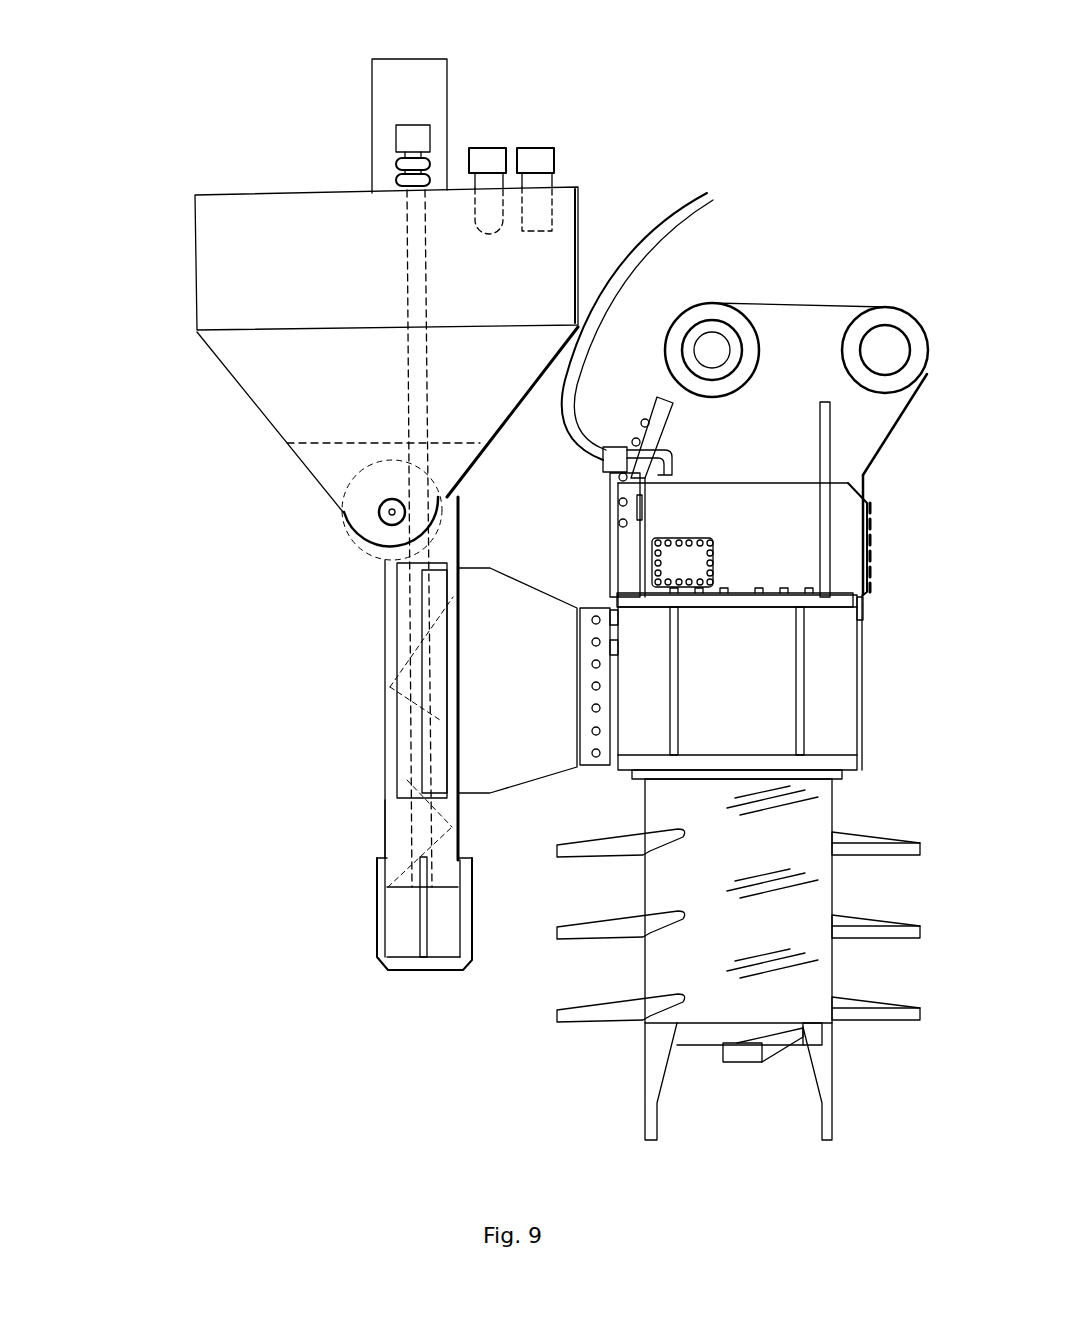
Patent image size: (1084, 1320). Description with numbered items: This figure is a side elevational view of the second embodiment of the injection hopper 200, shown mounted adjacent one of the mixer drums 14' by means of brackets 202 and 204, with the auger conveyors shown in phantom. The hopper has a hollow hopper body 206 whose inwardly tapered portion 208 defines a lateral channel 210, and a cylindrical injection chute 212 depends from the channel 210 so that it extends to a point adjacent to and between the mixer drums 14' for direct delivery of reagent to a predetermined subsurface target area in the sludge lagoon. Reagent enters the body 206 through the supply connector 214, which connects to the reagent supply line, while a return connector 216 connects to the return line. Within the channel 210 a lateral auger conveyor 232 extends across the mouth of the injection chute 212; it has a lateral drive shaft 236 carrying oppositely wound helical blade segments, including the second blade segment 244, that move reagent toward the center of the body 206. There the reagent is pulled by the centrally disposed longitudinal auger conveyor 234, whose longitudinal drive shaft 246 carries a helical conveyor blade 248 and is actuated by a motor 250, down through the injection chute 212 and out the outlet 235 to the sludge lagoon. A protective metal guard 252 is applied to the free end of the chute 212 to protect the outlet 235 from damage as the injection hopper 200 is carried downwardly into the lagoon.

The injection hopper 200 is at (203, 168).
The bracket 202 is at (598, 400).
The bracket 204 is at (508, 748).
The hopper body 206 is at (197, 300).
The inwardly tapered portion 208 is at (230, 370).
The lateral channel 210 is at (360, 548).
The injection chute 212 is at (385, 782).
The supply connector 214 is at (492, 148).
The return connector 216 is at (536, 150).
The lateral auger conveyor 232 is at (340, 473).
The longitudinal auger conveyor 234 is at (395, 615).
The outlet 235 is at (400, 887).
The lateral drive shaft 236 is at (440, 520).
The second blade segment 244 is at (435, 498).
The longitudinal drive shaft 246 is at (400, 660).
The helical conveyor blade 248 is at (390, 717).
The motor 250 is at (378, 105).
The protective metal guard 252 is at (392, 965).
The mixer drum 14' is at (757, 946).